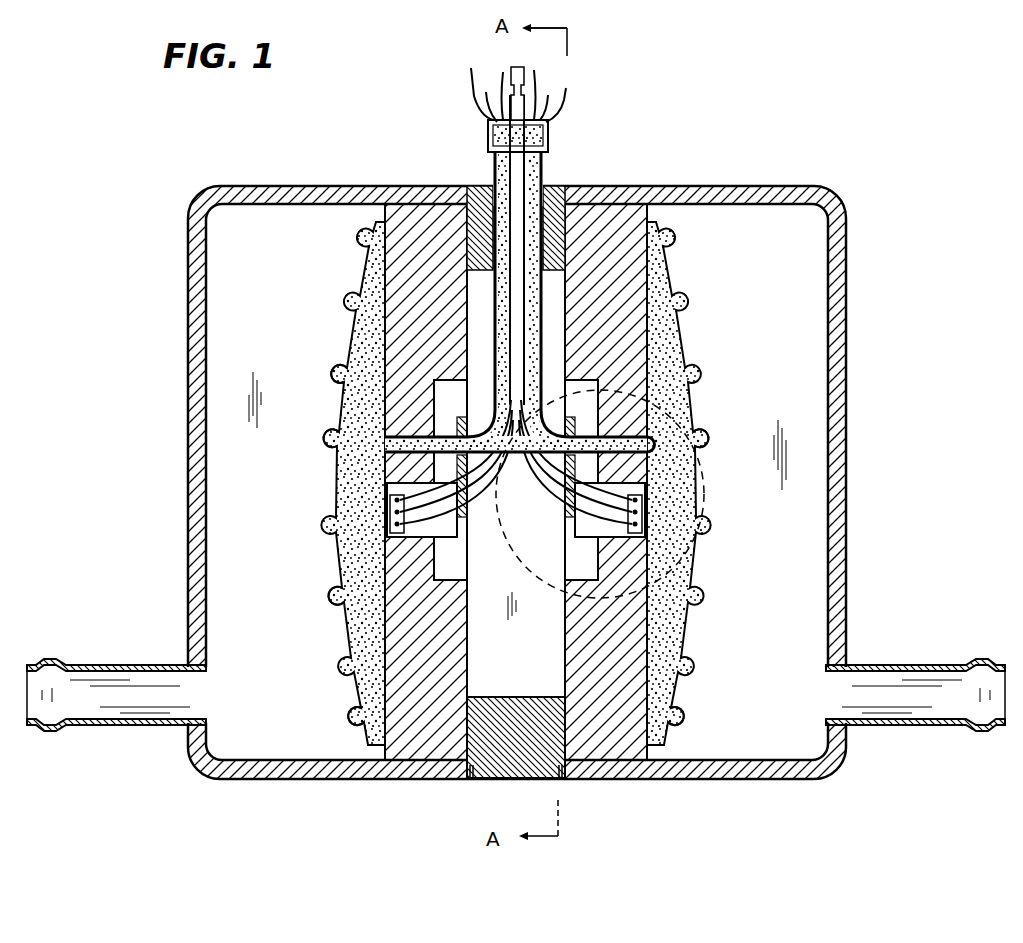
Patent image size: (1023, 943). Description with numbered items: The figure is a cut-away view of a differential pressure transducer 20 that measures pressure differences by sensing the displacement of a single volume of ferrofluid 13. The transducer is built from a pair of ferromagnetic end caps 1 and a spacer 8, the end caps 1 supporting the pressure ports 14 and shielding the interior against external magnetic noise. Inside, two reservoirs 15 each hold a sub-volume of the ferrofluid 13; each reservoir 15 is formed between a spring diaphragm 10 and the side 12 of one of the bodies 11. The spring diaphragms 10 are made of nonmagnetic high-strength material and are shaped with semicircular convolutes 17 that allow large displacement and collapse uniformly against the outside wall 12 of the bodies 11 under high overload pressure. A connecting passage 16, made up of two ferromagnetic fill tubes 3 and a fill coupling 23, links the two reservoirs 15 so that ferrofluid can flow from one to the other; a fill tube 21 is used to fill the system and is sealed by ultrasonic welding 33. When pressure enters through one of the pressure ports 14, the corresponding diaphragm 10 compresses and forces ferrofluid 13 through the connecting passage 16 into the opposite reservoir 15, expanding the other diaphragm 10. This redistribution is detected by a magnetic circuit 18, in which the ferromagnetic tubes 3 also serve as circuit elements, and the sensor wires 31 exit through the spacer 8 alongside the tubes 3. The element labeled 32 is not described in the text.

The end cap 1 is at (846, 334).
The ferromagnetic fill tube 3 is at (492, 178).
The spacer 8 is at (490, 780).
The spring diaphragm 10 is at (678, 345).
The body 11 is at (612, 210).
The side of body 12 is at (366, 703).
The ferrofluid 13 is at (346, 375).
The pressure port 14 is at (104, 665).
The reservoir 15 is at (340, 440).
The connecting passage 16 is at (690, 486).
The semicircular convolute 17 is at (346, 605).
The magnetic circuit 18 is at (690, 545).
The differential pressure transducer 20 is at (846, 403).
The fill tube 21 is at (512, 72).
The fill coupling 23 is at (490, 150).
The wire 31 is at (564, 112).
The notch 32 is at (556, 780).
The ultrasonic welding 33 is at (498, 92).